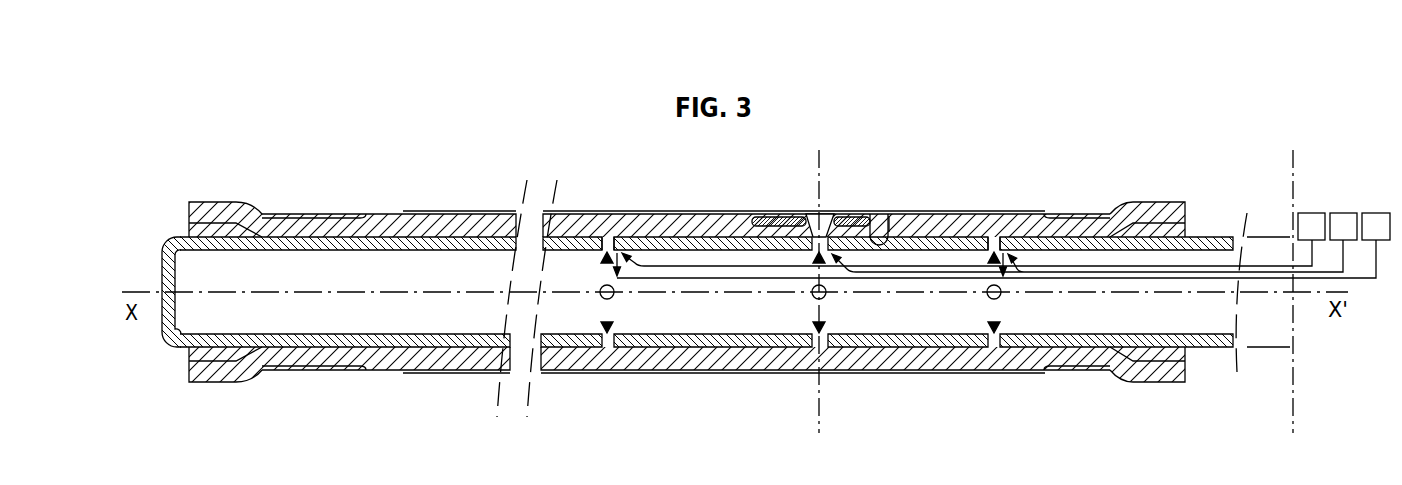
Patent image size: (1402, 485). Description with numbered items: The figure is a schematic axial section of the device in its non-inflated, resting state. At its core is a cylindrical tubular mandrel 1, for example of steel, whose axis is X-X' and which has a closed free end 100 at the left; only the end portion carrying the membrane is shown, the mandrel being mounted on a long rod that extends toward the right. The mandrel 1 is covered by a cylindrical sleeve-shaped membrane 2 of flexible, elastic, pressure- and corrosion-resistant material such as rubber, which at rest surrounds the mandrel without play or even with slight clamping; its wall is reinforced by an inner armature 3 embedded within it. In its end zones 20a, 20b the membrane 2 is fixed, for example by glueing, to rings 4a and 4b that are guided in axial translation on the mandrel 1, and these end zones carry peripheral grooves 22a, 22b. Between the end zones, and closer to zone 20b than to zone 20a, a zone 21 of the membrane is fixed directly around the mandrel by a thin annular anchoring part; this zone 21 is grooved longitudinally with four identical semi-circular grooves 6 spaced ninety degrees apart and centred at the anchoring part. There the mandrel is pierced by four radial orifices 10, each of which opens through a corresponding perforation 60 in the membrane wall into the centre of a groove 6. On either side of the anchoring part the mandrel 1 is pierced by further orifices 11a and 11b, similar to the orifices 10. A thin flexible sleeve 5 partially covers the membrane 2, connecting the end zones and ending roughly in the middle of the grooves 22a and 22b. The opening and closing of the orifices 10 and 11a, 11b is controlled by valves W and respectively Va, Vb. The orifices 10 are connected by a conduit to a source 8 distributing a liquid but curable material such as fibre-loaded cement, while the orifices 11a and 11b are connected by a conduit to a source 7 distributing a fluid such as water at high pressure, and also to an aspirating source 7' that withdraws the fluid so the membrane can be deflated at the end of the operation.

The cylindrical tubular mandrel 1 is at (392, 343).
The membrane 2 is at (707, 360).
The inner armature 3 is at (708, 222).
The ring 4a is at (212, 358).
The ring 4b is at (1165, 360).
The sleeve 5 is at (460, 211).
The groove 6 is at (873, 213).
The source for distributing fluid 7 is at (973, 239).
The source for aspirating 7' is at (1002, 245).
The source for distributing curable material 8 is at (1094, 242).
The radial orifice 10 is at (821, 336).
The orifice 11a is at (611, 336).
The orifice 11b is at (999, 336).
The end zone 20a is at (219, 201).
The end zone 20b is at (1160, 201).
The zone of the membrane 21 is at (766, 224).
The peripheral groove 22a is at (383, 212).
The peripheral groove 22b is at (1040, 214).
The perforation 60 is at (812, 228).
The closed free end 100 is at (167, 313).
The valve Va is at (604, 237).
The valve Vb is at (993, 237).
The valve W is at (828, 230).